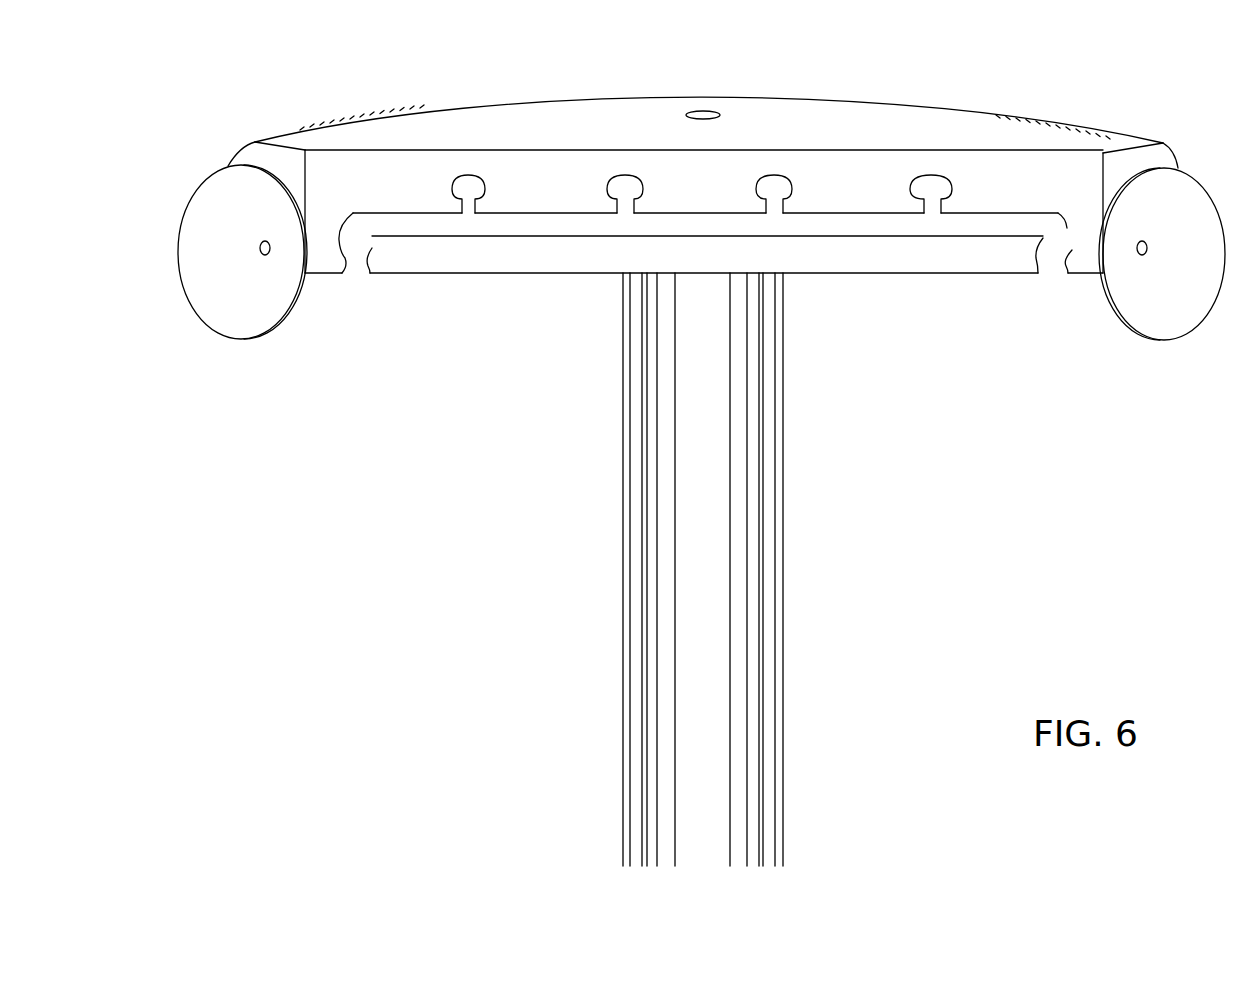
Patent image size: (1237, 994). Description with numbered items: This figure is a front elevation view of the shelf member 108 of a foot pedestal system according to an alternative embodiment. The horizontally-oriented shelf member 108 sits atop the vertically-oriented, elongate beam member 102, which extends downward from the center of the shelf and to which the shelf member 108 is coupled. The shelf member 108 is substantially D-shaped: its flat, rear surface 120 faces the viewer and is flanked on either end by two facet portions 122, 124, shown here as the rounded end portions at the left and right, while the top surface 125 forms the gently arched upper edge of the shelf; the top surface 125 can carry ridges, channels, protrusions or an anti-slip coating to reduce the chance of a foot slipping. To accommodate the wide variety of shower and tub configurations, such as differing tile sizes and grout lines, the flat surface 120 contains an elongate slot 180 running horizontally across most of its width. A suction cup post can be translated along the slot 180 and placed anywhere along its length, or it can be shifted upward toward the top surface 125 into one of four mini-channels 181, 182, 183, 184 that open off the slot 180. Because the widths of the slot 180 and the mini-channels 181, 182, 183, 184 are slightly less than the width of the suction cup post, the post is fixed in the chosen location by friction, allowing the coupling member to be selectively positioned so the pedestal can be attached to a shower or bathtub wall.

The shelf member 108 is at (1122, 76).
The beam member 102 is at (786, 438).
The flat rear surface 120 is at (367, 187).
The facet portion 122 is at (1155, 160).
The facet portion 124 is at (250, 153).
The top surface 125 is at (611, 139).
The elongate slot 180 is at (900, 240).
The mini-channel 181 is at (496, 197).
The mini-channel 182 is at (668, 168).
The mini-channel 183 is at (801, 179).
The mini-channel 184 is at (968, 168).